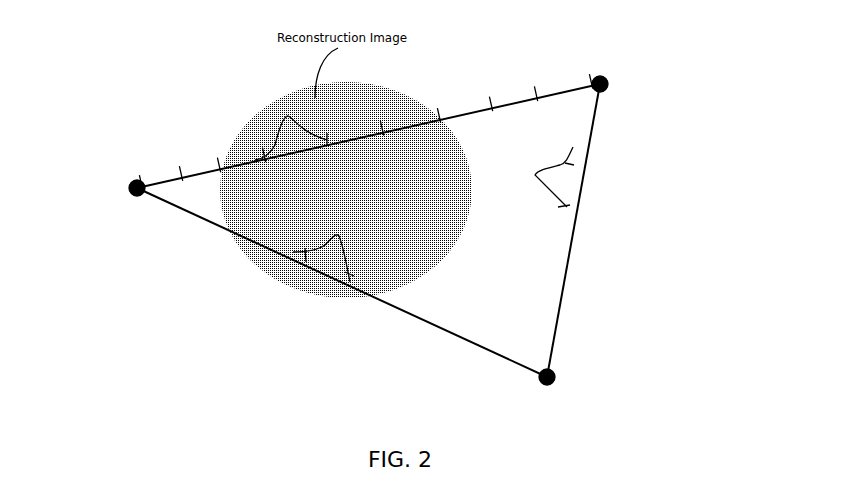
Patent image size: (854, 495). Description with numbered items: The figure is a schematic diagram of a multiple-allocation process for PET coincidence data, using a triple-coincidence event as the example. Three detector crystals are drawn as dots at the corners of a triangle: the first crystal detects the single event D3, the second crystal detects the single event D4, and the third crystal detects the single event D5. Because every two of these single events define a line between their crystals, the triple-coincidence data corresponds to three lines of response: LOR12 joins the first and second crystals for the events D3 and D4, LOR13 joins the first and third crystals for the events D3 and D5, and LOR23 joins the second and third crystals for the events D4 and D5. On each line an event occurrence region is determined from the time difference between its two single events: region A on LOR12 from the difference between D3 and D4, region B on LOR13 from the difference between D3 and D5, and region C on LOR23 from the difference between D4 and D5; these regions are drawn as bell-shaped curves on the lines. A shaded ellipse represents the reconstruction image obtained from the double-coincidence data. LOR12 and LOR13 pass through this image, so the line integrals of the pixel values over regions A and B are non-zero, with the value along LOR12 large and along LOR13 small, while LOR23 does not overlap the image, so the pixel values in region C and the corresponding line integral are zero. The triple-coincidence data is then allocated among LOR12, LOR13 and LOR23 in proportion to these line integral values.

The single event detected by crystal J1 D3 is at (100, 199).
The single event detected by crystal J2 D4 is at (636, 95).
The single event detected by crystal J3 D5 is at (583, 390).
The line of response between crystal J1 and crystal J2 LOR12 is at (368, 132).
The line of response between crystal J1 and crystal J3 LOR13 is at (342, 282).
The line of response between crystal J2 and crystal J3 LOR23 is at (575, 230).
The event occurrence region on LOR12 A is at (257, 195).
The event occurrence region on LOR13 B is at (298, 320).
The event occurrence region on LOR23 C is at (635, 178).